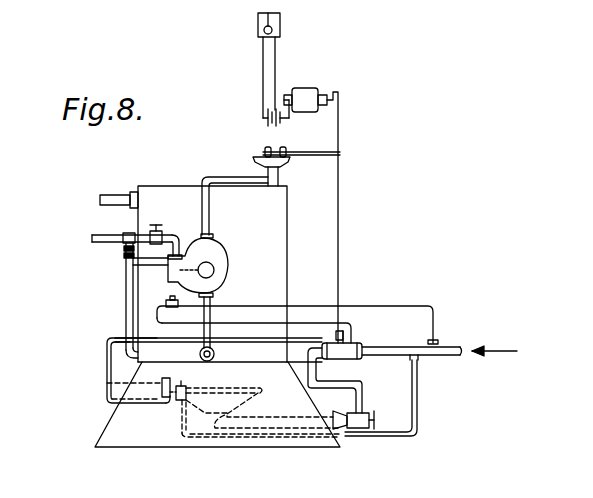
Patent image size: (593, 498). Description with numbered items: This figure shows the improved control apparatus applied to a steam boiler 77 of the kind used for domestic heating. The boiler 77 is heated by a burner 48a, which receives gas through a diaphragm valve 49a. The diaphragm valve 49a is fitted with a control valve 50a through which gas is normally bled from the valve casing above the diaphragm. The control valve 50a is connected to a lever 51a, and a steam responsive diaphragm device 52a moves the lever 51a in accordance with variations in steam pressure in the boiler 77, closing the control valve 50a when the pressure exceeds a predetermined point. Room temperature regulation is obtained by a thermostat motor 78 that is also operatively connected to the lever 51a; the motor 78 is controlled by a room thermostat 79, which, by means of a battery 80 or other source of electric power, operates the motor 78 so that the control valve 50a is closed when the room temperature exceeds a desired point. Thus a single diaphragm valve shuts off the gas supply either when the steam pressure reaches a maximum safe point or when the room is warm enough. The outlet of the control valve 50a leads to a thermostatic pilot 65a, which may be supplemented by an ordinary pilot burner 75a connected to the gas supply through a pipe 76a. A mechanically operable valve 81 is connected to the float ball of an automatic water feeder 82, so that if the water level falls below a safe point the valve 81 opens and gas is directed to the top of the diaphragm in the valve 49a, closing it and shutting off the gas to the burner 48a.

The room thermostat 79 is at (280, 24).
The thermostat motor 78 is at (306, 93).
The battery 80 is at (267, 121).
The lever 51a is at (340, 153).
The steam responsive diaphragm device 52a is at (283, 160).
The steam boiler 77 is at (279, 219).
The automatic water feeder 82 is at (212, 250).
The mechanically operable valve 81 is at (168, 303).
The control valve 50a is at (346, 336).
The diaphragm valve 49a is at (352, 356).
The thermostatic pilot 65a is at (107, 383).
The burner 48a is at (227, 388).
The pilot burner 75a is at (178, 401).
The pipe 76a is at (388, 436).